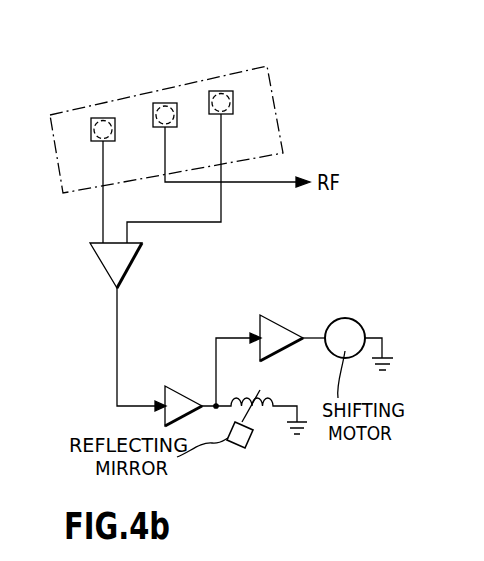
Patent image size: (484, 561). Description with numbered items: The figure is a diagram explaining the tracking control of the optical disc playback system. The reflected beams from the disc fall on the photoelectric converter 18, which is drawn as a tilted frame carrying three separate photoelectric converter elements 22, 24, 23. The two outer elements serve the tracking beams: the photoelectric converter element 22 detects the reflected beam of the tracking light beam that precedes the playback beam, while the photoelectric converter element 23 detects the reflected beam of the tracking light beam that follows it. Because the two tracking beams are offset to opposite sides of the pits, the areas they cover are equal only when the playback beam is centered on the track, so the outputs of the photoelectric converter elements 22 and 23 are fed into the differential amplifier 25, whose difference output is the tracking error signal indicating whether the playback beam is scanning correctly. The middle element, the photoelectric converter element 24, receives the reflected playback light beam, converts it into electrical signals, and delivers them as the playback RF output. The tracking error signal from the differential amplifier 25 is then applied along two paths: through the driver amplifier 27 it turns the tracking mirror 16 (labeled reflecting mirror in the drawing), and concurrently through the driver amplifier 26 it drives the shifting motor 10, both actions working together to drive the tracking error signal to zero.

The shifting motor 10 is at (347, 328).
The tracking mirror 16 is at (252, 438).
The photoelectric converter 18 is at (275, 107).
The photoelectric converter element 22 is at (98, 118).
The photoelectric converter element 23 is at (221, 91).
The photoelectric converter element 24 is at (165, 103).
The differential amplifier 25 is at (126, 258).
The driver amplifier 26 is at (276, 328).
The driver amplifier 27 is at (176, 395).